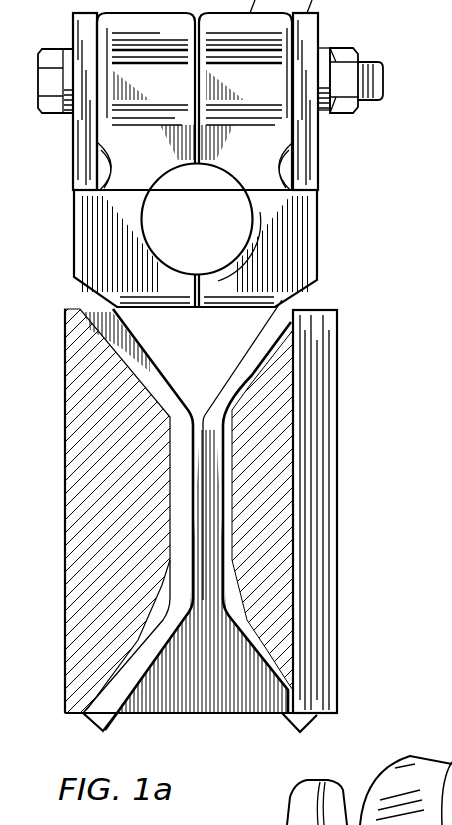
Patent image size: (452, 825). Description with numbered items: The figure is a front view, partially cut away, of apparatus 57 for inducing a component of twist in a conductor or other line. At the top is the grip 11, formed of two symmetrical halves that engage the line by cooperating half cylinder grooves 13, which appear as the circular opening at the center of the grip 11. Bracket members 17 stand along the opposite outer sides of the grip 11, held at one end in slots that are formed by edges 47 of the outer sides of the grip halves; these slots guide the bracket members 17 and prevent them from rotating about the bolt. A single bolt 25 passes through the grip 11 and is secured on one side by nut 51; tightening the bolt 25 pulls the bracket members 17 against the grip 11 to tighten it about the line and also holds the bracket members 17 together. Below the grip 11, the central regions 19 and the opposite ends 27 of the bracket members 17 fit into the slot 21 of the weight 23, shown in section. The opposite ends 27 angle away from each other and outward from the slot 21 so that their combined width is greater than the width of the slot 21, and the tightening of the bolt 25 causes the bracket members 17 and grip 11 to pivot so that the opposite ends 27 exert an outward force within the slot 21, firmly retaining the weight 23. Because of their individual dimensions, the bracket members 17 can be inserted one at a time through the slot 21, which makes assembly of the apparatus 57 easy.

The grip 11 is at (278, 199).
The half cylinder grooves 13 is at (145, 228).
The bracket members 17 is at (74, 139).
The central regions 19 is at (212, 480).
The slot 21 is at (236, 420).
The weight 23 is at (57, 700).
The bolt 25 is at (371, 60).
The opposite ends 27 is at (100, 722).
The edges 47 is at (80, 237).
The nut 51 is at (351, 104).
The apparatus 57 is at (398, 405).